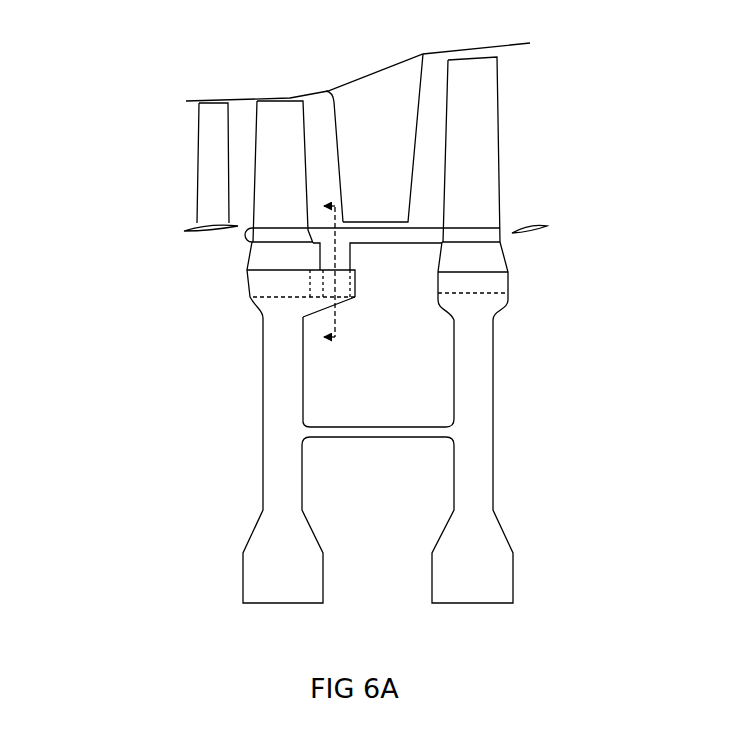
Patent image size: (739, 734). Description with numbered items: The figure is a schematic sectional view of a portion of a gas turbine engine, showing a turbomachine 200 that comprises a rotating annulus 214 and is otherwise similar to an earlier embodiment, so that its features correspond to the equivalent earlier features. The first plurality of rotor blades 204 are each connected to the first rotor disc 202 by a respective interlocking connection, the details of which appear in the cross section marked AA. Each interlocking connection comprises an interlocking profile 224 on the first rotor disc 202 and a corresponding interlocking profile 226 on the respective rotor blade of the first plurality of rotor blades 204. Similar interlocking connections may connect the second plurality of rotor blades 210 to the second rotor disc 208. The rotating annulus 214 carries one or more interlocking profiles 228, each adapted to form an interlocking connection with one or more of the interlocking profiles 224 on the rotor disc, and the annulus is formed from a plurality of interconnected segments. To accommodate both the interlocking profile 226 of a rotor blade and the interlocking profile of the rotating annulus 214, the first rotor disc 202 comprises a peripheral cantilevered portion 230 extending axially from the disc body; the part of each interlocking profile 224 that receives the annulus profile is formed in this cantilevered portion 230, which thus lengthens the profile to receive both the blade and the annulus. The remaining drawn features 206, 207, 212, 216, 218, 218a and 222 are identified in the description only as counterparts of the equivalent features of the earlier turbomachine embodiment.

The turbomachine 200 is at (117, 52).
The first rotor disc 202 is at (260, 443).
The first plurality of rotor blades 204 is at (280, 103).
The second airfoil 206 is at (312, 107).
The outer casing / shroud line 207 is at (453, 50).
The second rotor disc 208 is at (495, 363).
The second plurality of rotor blades 210 is at (498, 97).
The cavity between shanks 212 is at (399, 417).
The rotating annulus 214 is at (407, 254).
The platform 216 is at (420, 230).
The adjacent airfoil 218 is at (200, 163).
The airfoil tip section 218a is at (212, 232).
The adjacent airfoil section 222 is at (537, 234).
The interlocking profile 224 is at (258, 297).
The interlocking profile 226 is at (247, 280).
The interlocking profile 228 is at (357, 285).
The peripheral cantilevered portion 230 is at (347, 323).